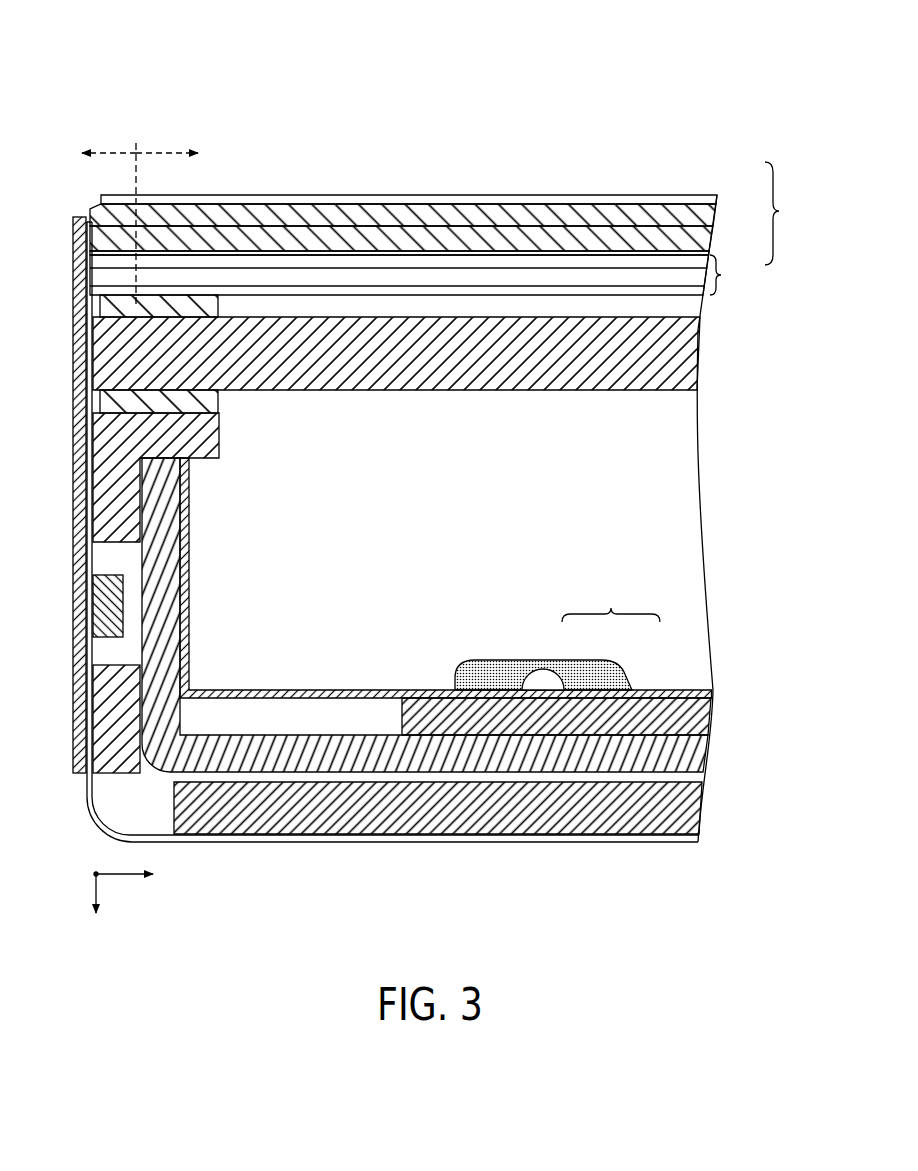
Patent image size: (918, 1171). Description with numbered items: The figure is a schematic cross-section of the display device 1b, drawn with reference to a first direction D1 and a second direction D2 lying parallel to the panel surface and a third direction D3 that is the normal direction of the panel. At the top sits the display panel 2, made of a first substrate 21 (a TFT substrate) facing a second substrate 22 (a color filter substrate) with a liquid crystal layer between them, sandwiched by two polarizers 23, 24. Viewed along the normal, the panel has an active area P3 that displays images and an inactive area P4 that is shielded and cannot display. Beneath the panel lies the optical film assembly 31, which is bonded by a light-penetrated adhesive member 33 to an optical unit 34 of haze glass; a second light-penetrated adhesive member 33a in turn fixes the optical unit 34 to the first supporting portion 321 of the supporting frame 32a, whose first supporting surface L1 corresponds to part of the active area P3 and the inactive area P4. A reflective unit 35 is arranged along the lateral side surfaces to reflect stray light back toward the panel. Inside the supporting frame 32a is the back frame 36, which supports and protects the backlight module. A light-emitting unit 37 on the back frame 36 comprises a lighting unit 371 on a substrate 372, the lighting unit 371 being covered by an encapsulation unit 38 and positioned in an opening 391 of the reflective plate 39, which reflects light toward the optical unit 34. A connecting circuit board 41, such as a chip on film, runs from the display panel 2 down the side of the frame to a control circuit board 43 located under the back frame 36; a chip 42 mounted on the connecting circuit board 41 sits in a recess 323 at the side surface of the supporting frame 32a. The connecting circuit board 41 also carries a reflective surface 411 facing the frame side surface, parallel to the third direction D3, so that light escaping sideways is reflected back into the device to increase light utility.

The display device 1b is at (125, 48).
The display panel 2 is at (778, 213).
The first substrate 21 is at (700, 240).
The second substrate 22 is at (703, 214).
The polarizer 23 is at (705, 254).
The polarizer 24 is at (704, 196).
The optical film assembly 31 is at (418, 275).
The supporting frame 32a is at (212, 447).
The first supporting portion 321 is at (191, 593).
The recess 323 is at (130, 553).
The light-penetrated adhesive member 33 is at (113, 308).
The light-penetrated adhesive member 33a is at (112, 400).
The optical unit 34 is at (470, 376).
The reflective unit 35 is at (78, 485).
The back frame 36 is at (698, 757).
The light-emitting unit 37 is at (557, 642).
The lighting unit 371 is at (558, 690).
The substrate 372 is at (608, 700).
The encapsulation unit 38 is at (492, 666).
The reflective plate 39 is at (712, 692).
The opening 391 is at (447, 688).
The connecting circuit board 41 is at (92, 808).
The reflective surface 411 is at (93, 642).
The chip 42 is at (100, 610).
The control circuit board 43 is at (173, 808).
The first supporting surface L1 is at (220, 410).
The active area P3 is at (181, 222).
The inactive area P4 is at (93, 153).
The first direction D1 is at (137, 874).
The second direction D2 is at (72, 874).
The third direction D3 is at (95, 910).